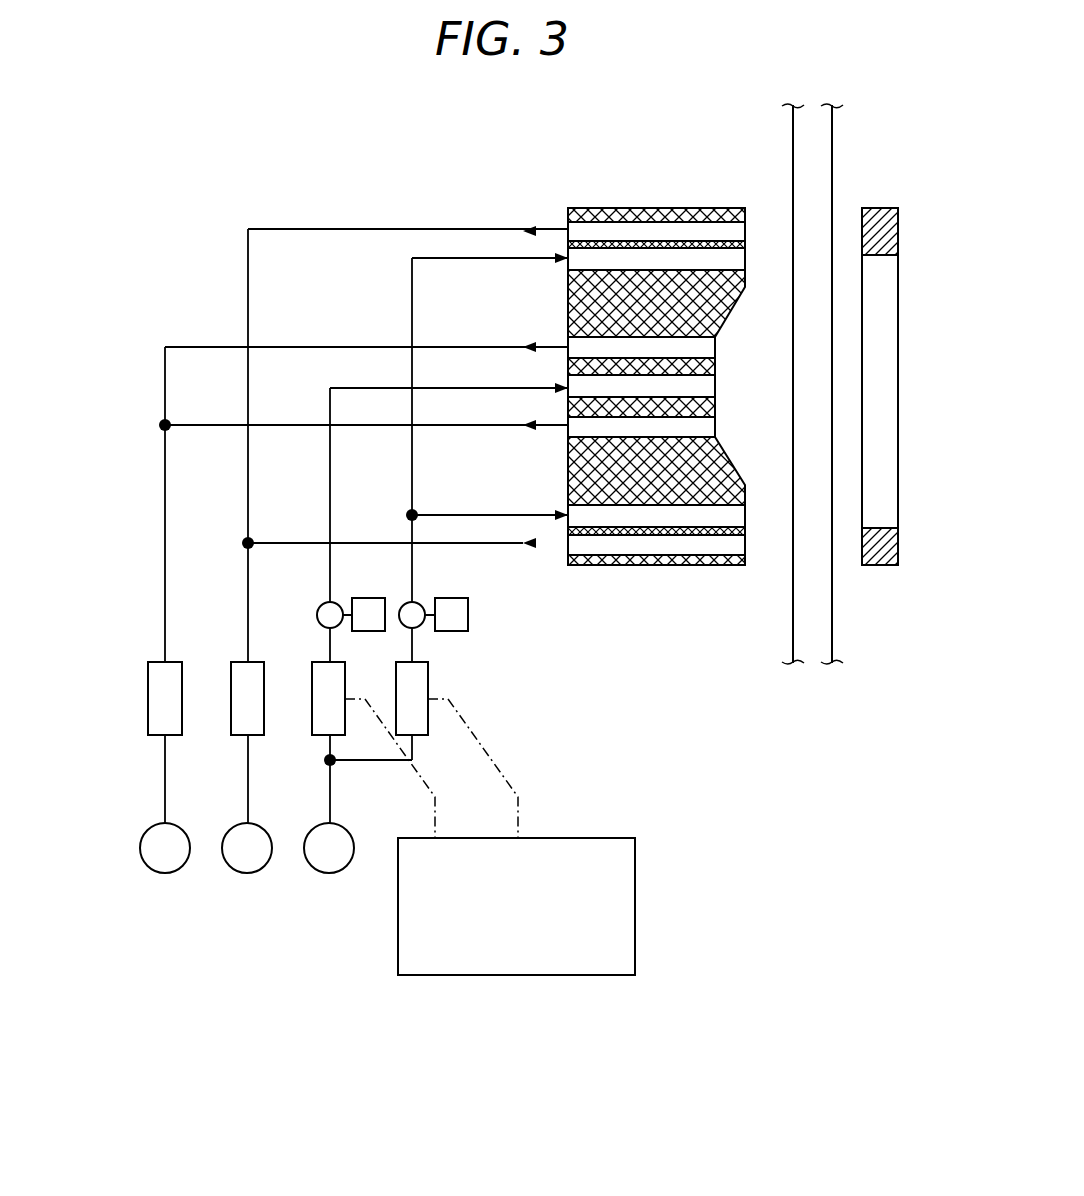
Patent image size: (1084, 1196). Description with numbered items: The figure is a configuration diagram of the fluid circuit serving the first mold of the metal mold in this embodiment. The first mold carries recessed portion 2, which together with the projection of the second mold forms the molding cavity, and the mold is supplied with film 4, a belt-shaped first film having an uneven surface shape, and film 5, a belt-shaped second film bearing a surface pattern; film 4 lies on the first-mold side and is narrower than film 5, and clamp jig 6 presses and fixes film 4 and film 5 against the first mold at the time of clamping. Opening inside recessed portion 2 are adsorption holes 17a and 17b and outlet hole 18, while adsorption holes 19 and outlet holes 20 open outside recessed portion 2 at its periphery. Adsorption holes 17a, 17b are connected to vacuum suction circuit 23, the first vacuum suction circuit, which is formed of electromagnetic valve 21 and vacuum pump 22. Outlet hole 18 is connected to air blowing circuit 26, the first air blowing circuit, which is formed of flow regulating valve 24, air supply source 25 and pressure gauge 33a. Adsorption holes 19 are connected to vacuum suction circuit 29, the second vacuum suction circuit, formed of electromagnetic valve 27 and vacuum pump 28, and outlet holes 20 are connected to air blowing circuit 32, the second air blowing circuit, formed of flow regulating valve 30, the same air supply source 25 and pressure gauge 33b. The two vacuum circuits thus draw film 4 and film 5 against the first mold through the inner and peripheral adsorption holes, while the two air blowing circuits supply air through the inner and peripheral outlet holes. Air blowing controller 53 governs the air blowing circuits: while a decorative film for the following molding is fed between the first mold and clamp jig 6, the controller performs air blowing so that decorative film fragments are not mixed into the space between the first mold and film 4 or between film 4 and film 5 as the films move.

The recessed portion 2 is at (728, 423).
The film 4 is at (793, 152).
The film 5 is at (832, 168).
The clamp jig 6 is at (885, 565).
The adsorption hole 17a is at (597, 430).
The adsorption hole 17b is at (597, 340).
The outlet hole 18 is at (590, 377).
The adsorption holes 19 is at (600, 232).
The outlet holes 20 is at (676, 262).
The electromagnetic valve 21 is at (160, 715).
The vacuum pump 22 is at (160, 862).
The vacuum suction circuit 23 is at (165, 520).
The flow regulating valve 24 is at (324, 715).
The air supply source 25 is at (325, 862).
The air blowing circuit 26 is at (330, 405).
The electromagnetic valve 27 is at (242, 715).
The vacuum pump 28 is at (243, 862).
The vacuum suction circuit 29 is at (248, 290).
The flow regulating valve 30 is at (417, 685).
The air blowing circuit 32 is at (412, 302).
The pressure gauge 33a is at (368, 598).
The pressure gauge 33b is at (452, 598).
The air blowing controller 53 is at (592, 960).